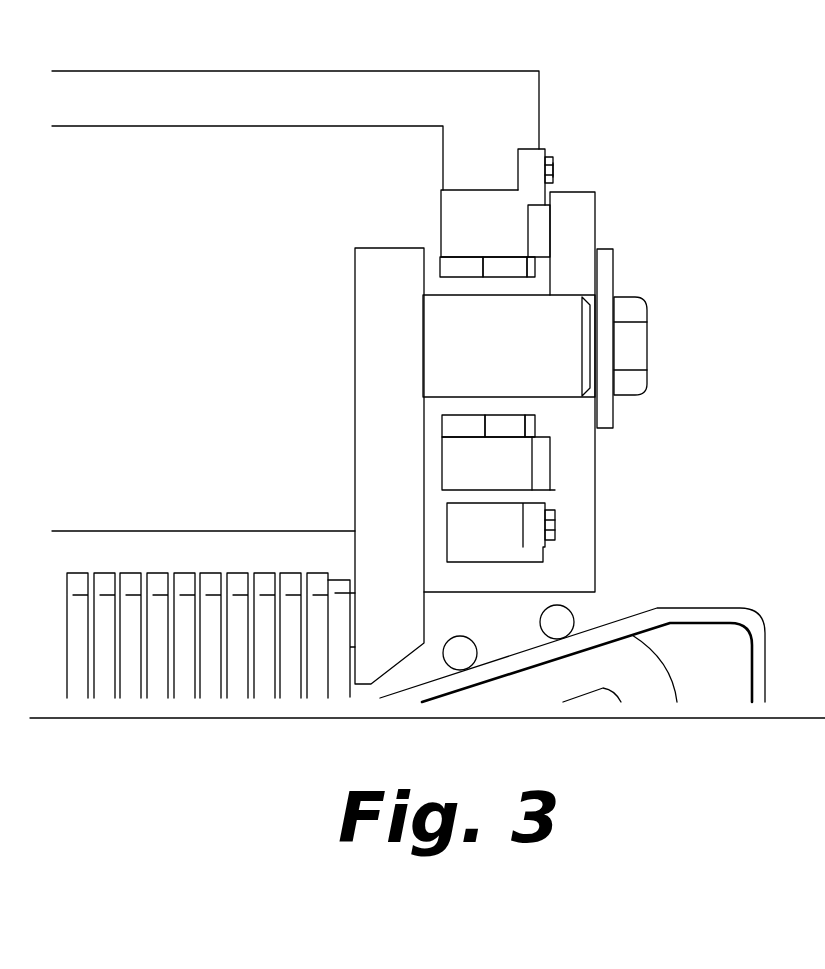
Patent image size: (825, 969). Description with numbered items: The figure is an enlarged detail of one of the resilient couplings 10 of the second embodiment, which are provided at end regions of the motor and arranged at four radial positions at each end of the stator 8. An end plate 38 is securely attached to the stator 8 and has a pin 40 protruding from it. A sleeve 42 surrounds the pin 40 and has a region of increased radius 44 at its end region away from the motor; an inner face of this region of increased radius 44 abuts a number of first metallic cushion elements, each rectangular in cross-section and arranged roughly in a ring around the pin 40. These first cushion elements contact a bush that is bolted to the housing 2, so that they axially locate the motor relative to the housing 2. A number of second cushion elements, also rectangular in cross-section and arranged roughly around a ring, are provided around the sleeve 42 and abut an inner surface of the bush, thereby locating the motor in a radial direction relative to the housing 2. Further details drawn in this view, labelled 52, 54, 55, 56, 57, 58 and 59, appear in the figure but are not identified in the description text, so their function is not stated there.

The housing 2 is at (343, 72).
The stator 8 is at (212, 585).
The resilient coupling 10 is at (675, 181).
The end plate 38 is at (373, 403).
The pin 40 is at (438, 322).
The sleeve 42 is at (583, 245).
The region of increased radius 44 is at (608, 212).
The nut 52 is at (637, 343).
The washer 54 is at (608, 277).
The contact element 55 is at (463, 278).
The screw head 56 is at (553, 165).
The contact piece 57 is at (441, 262).
The gap 58 is at (552, 500).
The edge 59 is at (535, 257).